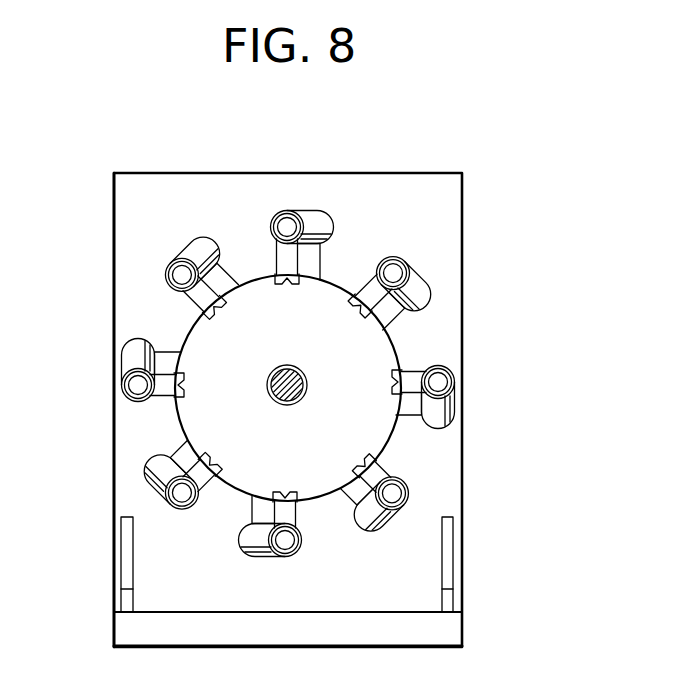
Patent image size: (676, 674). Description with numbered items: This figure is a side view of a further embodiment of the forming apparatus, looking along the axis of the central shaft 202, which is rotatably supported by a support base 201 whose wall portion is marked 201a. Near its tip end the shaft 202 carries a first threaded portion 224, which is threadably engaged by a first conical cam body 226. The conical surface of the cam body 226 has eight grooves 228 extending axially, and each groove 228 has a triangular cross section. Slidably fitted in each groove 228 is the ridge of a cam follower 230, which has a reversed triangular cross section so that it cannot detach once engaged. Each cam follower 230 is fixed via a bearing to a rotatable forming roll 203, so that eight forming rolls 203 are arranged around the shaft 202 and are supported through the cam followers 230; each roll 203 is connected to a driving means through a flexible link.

The support base 201 is at (470, 186).
The housing side wall 201a is at (114, 494).
The central shaft 202 is at (302, 369).
The first threaded portion 224 is at (280, 403).
The rotatable forming roll 203 is at (185, 258).
The cam follower 230 is at (223, 277).
The groove 228 is at (185, 387).
The first conical cam body 226 is at (222, 478).